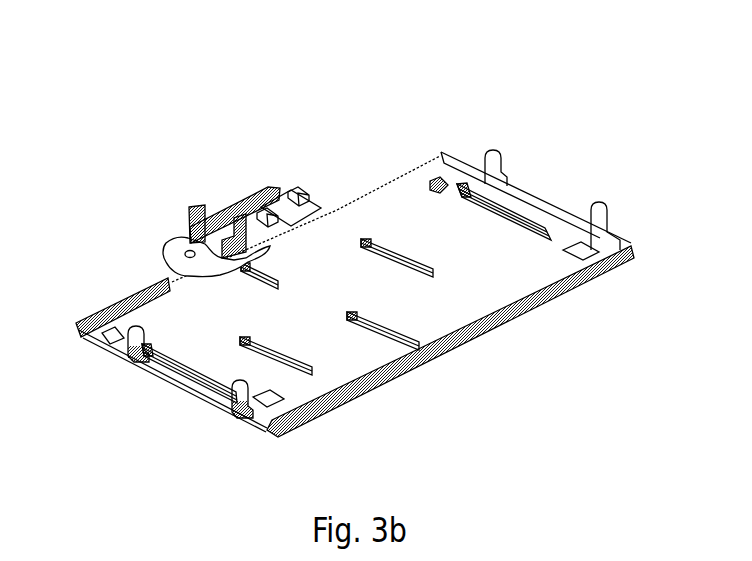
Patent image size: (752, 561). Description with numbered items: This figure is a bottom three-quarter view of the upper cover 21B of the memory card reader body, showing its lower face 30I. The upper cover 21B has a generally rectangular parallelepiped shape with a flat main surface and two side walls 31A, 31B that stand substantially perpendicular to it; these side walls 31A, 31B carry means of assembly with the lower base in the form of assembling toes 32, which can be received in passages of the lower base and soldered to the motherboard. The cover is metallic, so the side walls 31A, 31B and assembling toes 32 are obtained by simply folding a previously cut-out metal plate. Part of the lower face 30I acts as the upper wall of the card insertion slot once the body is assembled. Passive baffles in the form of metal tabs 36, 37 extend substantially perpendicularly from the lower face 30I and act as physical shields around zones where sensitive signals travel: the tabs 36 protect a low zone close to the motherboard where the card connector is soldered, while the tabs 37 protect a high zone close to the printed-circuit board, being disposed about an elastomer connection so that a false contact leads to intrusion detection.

The upper cover 21B is at (427, 120).
The lower face 30I is at (347, 367).
The side wall 31A is at (533, 197).
The side wall 31B is at (175, 380).
The assembling toe 32 is at (498, 151).
The metal tab 36 is at (197, 205).
The metal tab 37 is at (268, 188).